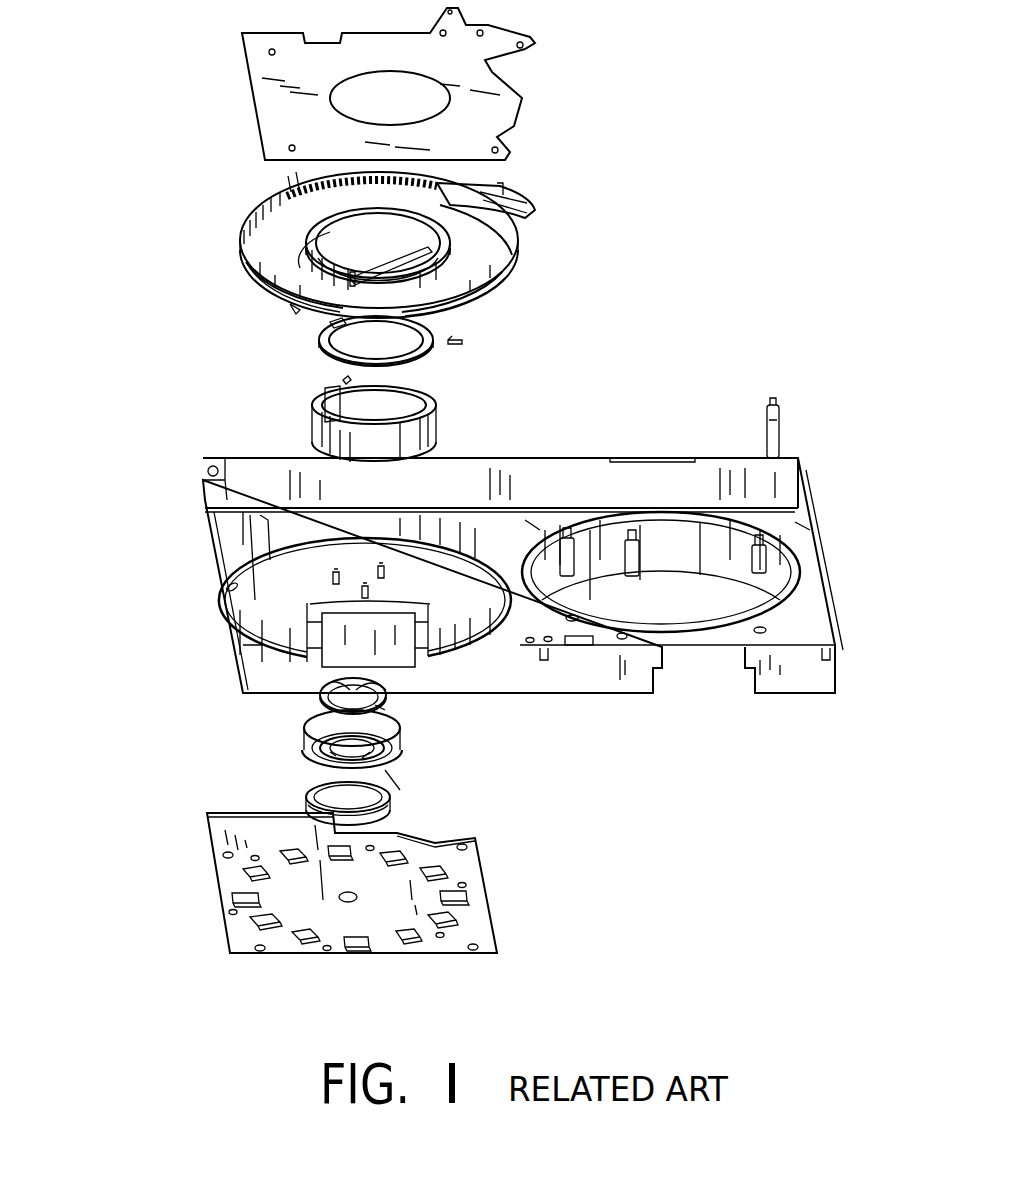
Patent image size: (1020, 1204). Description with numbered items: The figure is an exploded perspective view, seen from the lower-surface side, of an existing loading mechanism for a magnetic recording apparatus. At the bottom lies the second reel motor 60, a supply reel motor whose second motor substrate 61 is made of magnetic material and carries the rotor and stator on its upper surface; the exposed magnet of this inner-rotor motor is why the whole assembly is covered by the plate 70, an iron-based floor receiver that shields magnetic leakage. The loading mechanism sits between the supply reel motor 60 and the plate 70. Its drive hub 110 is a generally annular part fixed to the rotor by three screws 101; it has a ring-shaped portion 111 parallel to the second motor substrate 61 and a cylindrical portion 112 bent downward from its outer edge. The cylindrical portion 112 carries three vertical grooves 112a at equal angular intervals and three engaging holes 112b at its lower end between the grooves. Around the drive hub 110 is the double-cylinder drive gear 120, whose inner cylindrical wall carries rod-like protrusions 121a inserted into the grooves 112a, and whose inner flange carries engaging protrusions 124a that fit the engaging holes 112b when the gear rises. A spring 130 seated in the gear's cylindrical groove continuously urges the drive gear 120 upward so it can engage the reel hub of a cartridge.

The plate 70 is at (262, 130).
The screw 101 is at (330, 578).
The cylindrical portion 112 is at (436, 723).
The groove 112a is at (330, 690).
The engaging hole 112b is at (338, 703).
The drive hub 110 is at (395, 722).
The ring-shaped portion 111 is at (390, 735).
The drive gear 120 is at (377, 769).
The rod-like protrusion 121a is at (308, 770).
The engaging protrusion 124a is at (419, 794).
The spring 130 is at (306, 800).
The second reel motor 60 is at (341, 924).
The second motor substrate 61 is at (237, 930).